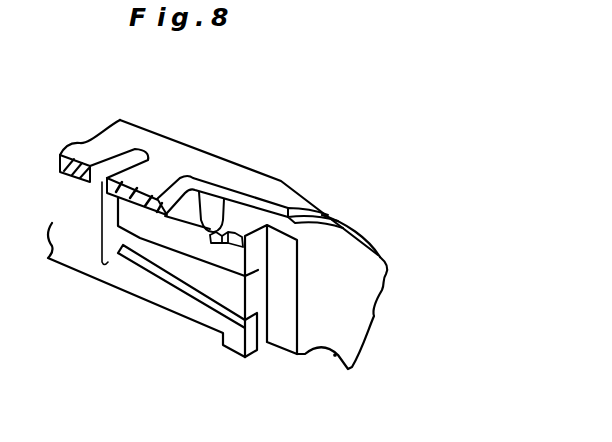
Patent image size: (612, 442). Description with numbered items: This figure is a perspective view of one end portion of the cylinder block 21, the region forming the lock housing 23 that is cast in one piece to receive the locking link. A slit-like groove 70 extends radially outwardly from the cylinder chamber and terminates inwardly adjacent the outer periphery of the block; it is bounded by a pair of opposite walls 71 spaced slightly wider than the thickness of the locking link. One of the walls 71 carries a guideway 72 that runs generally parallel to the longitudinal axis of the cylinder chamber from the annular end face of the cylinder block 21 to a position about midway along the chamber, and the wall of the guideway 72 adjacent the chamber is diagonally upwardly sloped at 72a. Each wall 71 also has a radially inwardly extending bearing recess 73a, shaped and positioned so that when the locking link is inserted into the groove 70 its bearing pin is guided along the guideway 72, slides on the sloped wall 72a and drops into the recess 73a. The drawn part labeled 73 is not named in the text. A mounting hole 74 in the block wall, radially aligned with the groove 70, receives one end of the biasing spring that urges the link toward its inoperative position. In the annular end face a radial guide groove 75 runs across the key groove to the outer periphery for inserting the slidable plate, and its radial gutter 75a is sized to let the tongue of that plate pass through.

The cylinder block 21 is at (352, 305).
The lock housing 23 is at (333, 253).
The slit-like groove 70 is at (155, 288).
The opposite walls 71 is at (123, 277).
The guideway 72 is at (233, 291).
The sloped wall 72a is at (200, 291).
The tab 73 is at (128, 157).
The bearing recess 73a is at (108, 265).
The mounting hole 74 is at (203, 208).
The radial guide groove 75 is at (282, 247).
The radial gutter 75a is at (243, 242).